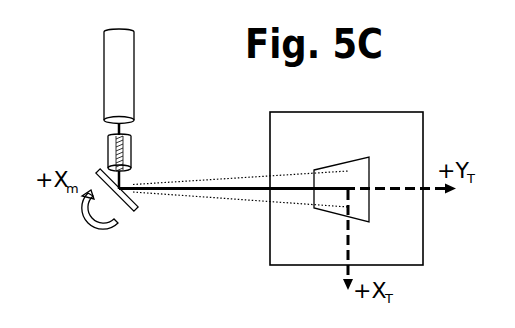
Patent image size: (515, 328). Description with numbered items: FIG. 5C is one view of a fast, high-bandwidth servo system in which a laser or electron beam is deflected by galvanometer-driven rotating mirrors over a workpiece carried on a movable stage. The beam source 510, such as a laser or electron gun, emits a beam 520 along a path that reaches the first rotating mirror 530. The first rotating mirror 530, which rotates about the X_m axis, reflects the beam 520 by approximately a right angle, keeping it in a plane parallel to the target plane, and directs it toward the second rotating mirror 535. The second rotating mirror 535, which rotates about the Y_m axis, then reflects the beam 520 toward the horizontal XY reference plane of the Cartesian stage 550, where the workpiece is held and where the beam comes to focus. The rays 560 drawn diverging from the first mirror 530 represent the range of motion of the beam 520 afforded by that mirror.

The beam source 510 is at (107, 71).
The beam 520 is at (109, 154).
The first rotating mirror 530 is at (132, 212).
The second rotating mirror 535 is at (369, 157).
The Cartesian stage 550 is at (398, 112).
The rays 560 is at (257, 199).